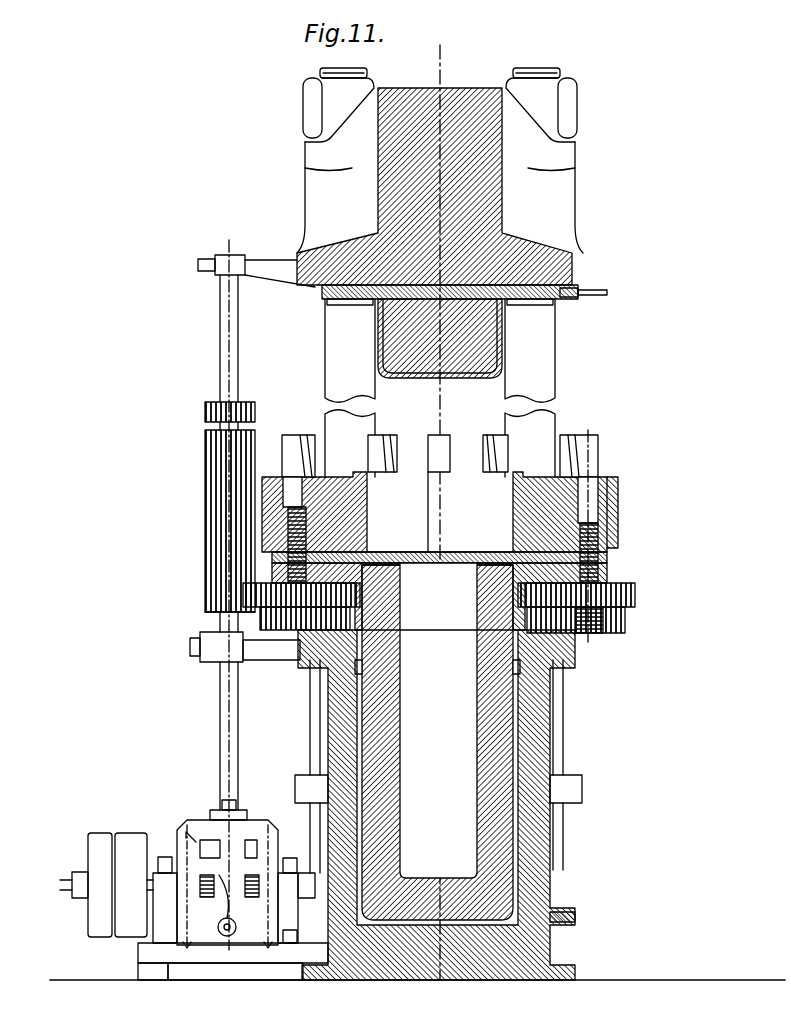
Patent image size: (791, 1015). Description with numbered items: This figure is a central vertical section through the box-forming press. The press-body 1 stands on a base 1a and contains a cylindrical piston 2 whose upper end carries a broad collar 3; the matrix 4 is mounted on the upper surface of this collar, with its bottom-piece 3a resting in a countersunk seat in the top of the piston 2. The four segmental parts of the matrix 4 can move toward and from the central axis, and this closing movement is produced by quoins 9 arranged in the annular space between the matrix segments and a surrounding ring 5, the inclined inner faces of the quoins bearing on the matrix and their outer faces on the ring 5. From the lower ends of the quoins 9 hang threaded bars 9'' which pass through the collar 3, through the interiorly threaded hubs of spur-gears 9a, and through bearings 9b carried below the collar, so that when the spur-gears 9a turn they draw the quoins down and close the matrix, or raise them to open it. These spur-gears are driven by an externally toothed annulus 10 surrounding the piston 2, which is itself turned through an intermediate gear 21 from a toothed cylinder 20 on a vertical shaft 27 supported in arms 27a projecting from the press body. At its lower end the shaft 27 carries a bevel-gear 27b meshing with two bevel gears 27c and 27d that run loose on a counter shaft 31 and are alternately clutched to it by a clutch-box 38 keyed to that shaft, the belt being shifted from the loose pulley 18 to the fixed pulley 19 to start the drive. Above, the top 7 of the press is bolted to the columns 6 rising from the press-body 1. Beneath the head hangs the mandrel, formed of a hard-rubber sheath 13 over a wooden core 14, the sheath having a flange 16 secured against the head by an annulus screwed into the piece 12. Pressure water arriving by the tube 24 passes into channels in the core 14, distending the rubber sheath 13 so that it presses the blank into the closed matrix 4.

The press-body 1 is at (535, 744).
The base 1a is at (579, 946).
The cylindrical piston 2 is at (480, 688).
The collar 3 is at (575, 576).
The bottom-piece 3a is at (462, 552).
The matrix 4 is at (630, 488).
The ring 5 is at (612, 520).
The columns 6 is at (440, 388).
The top of the press 7 is at (440, 176).
The quoins 9 is at (450, 537).
The spur-gears 9a is at (362, 620).
The bearings 9b is at (596, 620).
The threaded bars 9'' is at (614, 593).
The toothed annulus 10 is at (365, 597).
The piece 12 is at (322, 295).
The sheath 13 is at (466, 380).
The core 14 is at (428, 378).
The flange 16 is at (517, 305).
The loose pulley 18 is at (100, 885).
The fixed pulley 19 is at (131, 885).
The toothed cylinder 20 is at (216, 507).
The intermediate gear 21 is at (243, 596).
The tube 24 is at (607, 292).
The vertical shaft 27 is at (226, 744).
The arms 27a is at (252, 451).
The bevel-gear 27b is at (258, 818).
The bevel gear 27c is at (182, 830).
The bevel gear 27d is at (280, 838).
The counter shaft 31 is at (70, 887).
The clutch-box 38 is at (218, 905).